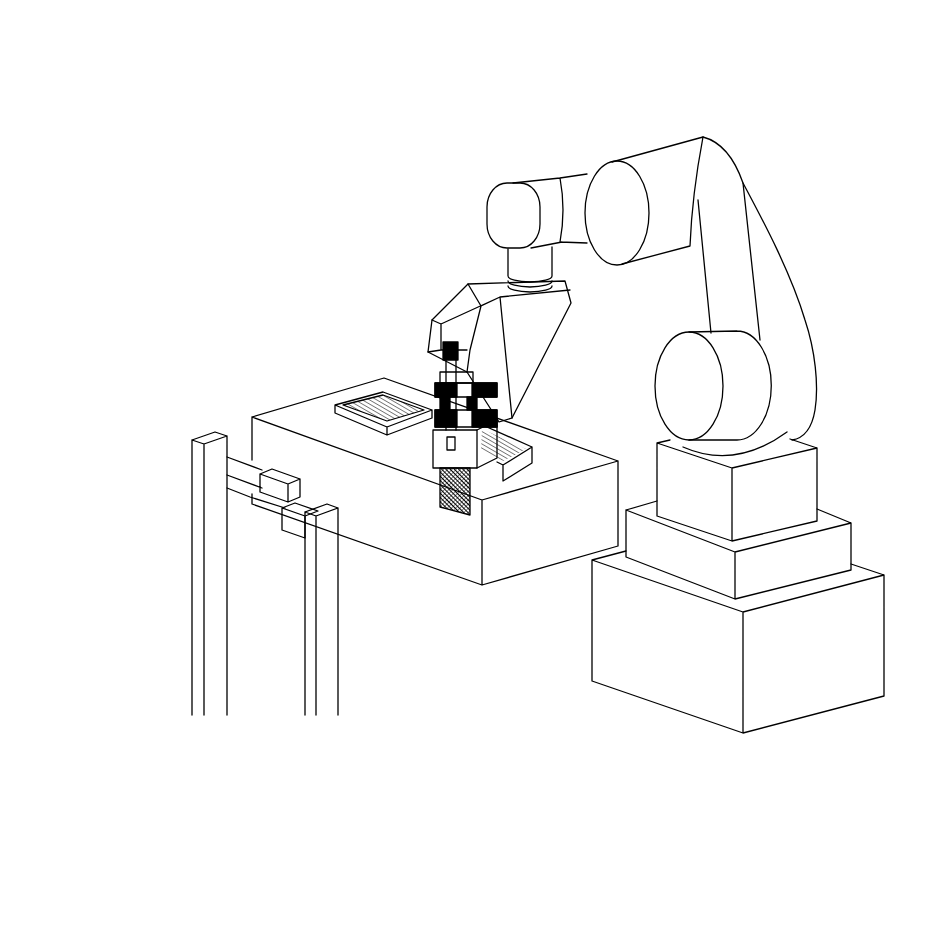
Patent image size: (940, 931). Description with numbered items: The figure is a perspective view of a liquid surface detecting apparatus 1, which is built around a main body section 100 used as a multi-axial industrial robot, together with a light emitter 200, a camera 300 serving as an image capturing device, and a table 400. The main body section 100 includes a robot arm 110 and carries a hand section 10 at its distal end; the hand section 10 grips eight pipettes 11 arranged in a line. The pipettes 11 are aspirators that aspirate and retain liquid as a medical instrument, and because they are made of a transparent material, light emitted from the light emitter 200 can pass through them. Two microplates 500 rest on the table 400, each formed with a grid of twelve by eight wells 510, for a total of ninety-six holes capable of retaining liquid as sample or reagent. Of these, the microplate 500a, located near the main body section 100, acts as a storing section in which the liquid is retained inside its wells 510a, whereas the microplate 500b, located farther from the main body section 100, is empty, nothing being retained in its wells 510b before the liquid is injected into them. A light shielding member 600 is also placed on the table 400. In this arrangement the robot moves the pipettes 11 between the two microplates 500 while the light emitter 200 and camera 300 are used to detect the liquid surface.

The liquid surface detecting apparatus 1 is at (694, 99).
The main body section 100 is at (788, 181).
The robot arm 110 is at (793, 285).
The light emitter 200 is at (243, 443).
The camera 300 is at (276, 541).
The table 400 is at (333, 393).
The microplate 500 is at (463, 159).
The microplate (storing section) 500a is at (473, 297).
The microplate 500b is at (408, 385).
The well 510 is at (358, 398).
The well 510a is at (527, 438).
The well 510b is at (333, 403).
The light shielding member 600 is at (513, 448).
The hand section 10 is at (430, 478).
The pipette 11 is at (453, 518).